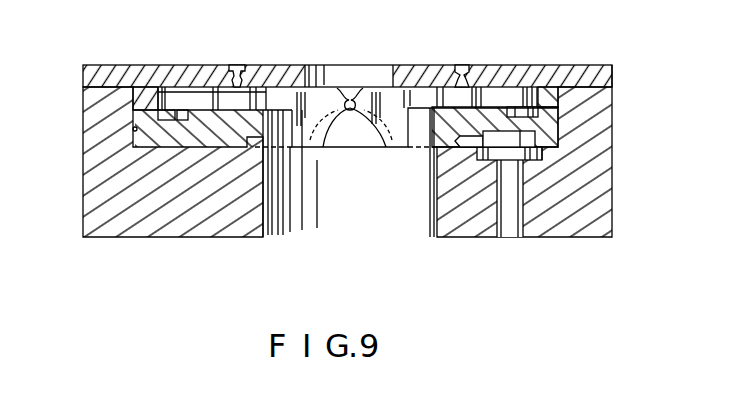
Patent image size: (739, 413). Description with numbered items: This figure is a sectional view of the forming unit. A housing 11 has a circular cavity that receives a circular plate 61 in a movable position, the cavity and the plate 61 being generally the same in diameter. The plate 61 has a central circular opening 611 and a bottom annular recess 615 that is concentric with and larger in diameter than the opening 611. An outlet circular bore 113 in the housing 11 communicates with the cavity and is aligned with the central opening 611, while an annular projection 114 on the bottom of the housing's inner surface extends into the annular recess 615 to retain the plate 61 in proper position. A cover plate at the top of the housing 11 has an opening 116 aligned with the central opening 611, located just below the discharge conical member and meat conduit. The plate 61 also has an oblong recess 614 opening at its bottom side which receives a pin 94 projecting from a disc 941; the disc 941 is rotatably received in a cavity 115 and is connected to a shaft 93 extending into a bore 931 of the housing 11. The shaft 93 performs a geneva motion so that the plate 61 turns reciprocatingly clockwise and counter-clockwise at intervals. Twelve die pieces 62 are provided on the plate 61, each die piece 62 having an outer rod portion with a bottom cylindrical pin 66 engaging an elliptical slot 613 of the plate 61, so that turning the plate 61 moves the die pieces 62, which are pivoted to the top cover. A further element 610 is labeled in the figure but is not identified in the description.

The housing 11 is at (598, 193).
The shaft 93 is at (518, 207).
The bore 931 is at (503, 225).
The disc 941 is at (540, 160).
The cavity 115 is at (542, 150).
The circular plate 61 is at (447, 147).
The bottom annular recess 615 is at (457, 138).
The pin 94 is at (562, 137).
The elliptical slot 613 is at (562, 110).
The bottom cylindrical pin 66 is at (520, 107).
The oblong recess 614 is at (500, 138).
The annular projection 114 is at (265, 142).
The outlet circular bore 113 is at (329, 226).
The central circular opening 611 is at (353, 137).
The opening 116 is at (341, 80).
The die piece 62 is at (398, 65).
The side block 610 is at (133, 129).